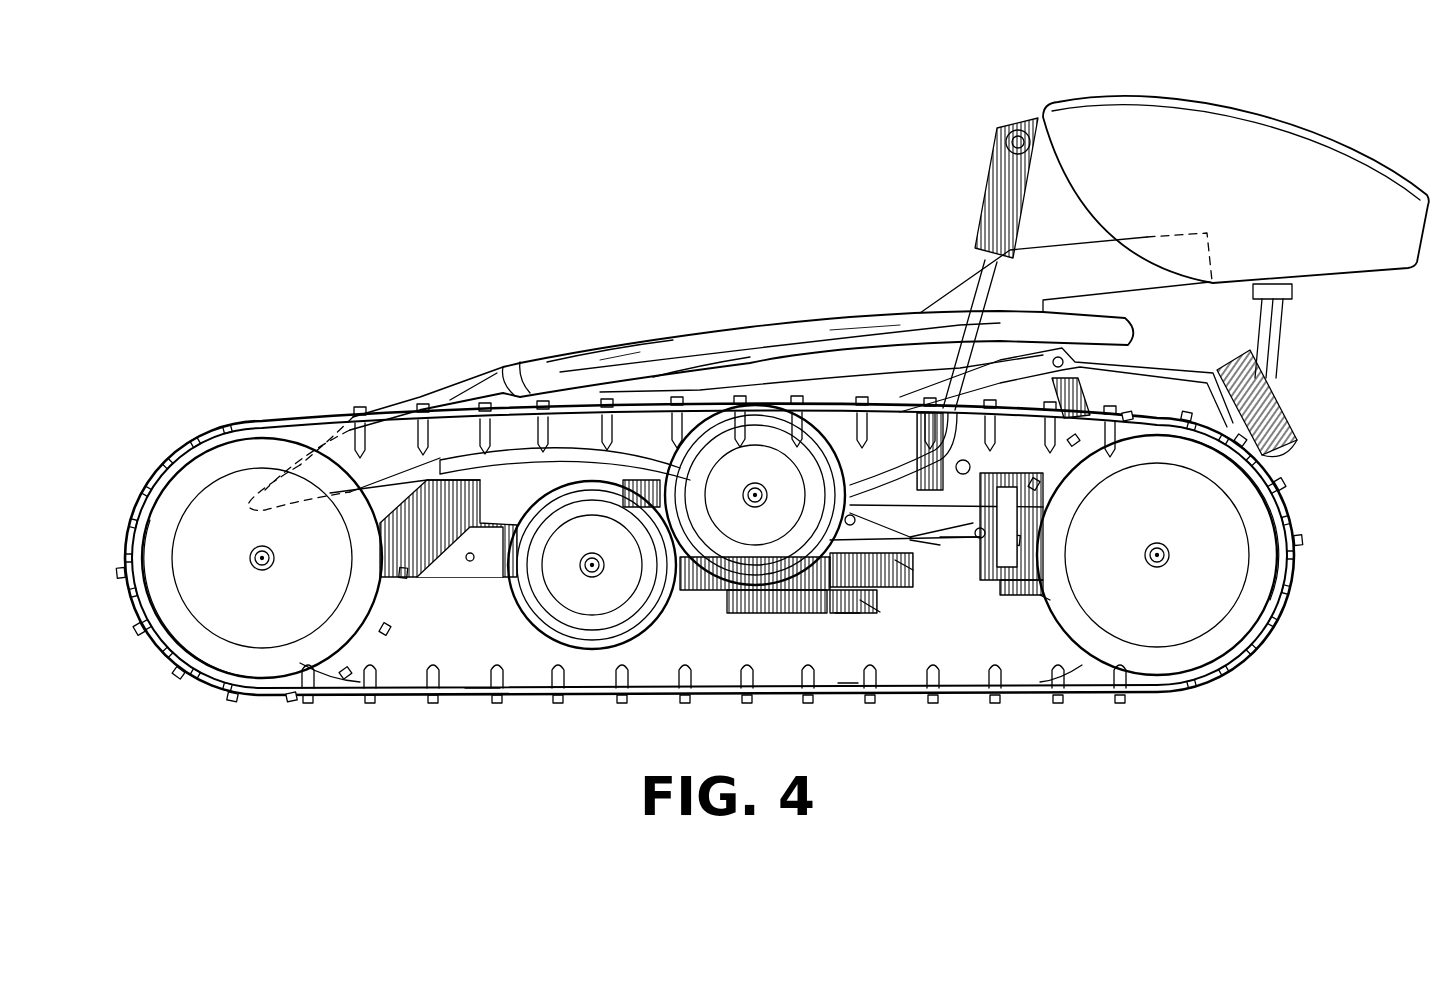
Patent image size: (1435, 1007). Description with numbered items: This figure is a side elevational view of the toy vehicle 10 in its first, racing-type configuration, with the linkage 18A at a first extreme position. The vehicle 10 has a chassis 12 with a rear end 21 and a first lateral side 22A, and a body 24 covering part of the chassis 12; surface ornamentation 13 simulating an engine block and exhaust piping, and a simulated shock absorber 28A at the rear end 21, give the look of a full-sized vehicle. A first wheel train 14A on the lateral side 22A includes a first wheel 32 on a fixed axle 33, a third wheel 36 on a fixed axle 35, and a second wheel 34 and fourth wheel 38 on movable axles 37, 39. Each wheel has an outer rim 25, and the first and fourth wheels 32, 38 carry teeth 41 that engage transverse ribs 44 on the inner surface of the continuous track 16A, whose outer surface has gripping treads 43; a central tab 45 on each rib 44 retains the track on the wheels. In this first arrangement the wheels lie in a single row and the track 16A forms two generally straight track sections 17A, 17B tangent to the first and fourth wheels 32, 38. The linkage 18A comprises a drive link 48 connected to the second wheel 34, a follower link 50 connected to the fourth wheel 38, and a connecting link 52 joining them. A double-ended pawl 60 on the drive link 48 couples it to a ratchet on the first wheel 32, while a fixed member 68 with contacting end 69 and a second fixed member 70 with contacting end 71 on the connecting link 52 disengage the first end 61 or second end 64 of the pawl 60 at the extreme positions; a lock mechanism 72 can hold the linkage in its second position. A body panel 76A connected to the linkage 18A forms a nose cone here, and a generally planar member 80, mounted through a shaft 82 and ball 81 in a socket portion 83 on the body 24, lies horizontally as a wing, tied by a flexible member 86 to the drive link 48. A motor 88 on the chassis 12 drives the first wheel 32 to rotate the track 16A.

The toy vehicle 10 is at (287, 308).
The chassis 12 is at (660, 450).
The surface ornamentation 13 is at (1067, 282).
The first wheel train 14A is at (258, 463).
The continuous track 16A is at (1166, 694).
The track section 17A is at (443, 408).
The track section 17B is at (482, 695).
The linkage 18A is at (447, 583).
The rear end 21 is at (902, 575).
The first lateral side 22A is at (913, 385).
The body 24 is at (585, 352).
The outer rim 25 is at (350, 625).
The shock absorber 28A is at (1087, 398).
The first wheel 32 is at (1282, 536).
The axle 33 is at (1170, 550).
The second wheel 34 is at (768, 406).
The axle 35 is at (590, 570).
The third wheel 36 is at (592, 650).
The axle 37 is at (762, 490).
The fourth wheel 38 is at (188, 650).
The axle 39 is at (250, 558).
The teeth 41 is at (305, 668).
The gripping treads 43 is at (353, 407).
The transverse ribs 44 is at (622, 680).
The central tab 45 is at (557, 665).
The drive link 48 is at (962, 542).
The follower link 50 is at (455, 580).
The connecting link 52 is at (400, 568).
The pawl 60 is at (1013, 593).
The first end of the pawl 61 is at (1040, 600).
The second end of the pawl 64 is at (1035, 470).
The fixed member 68 is at (847, 617).
The contacting end 69 is at (872, 612).
The second fixed member 70 is at (960, 500).
The contacting end 71 is at (933, 548).
The lock mechanism 72 is at (846, 690).
The body panel 76A is at (470, 375).
The generally planar member 80 is at (1295, 122).
The ball 81 is at (1288, 387).
The shaft 82 is at (1283, 332).
The socket portion 83 is at (1296, 428).
The flexible member 86 is at (992, 190).
The motor 88 is at (975, 560).